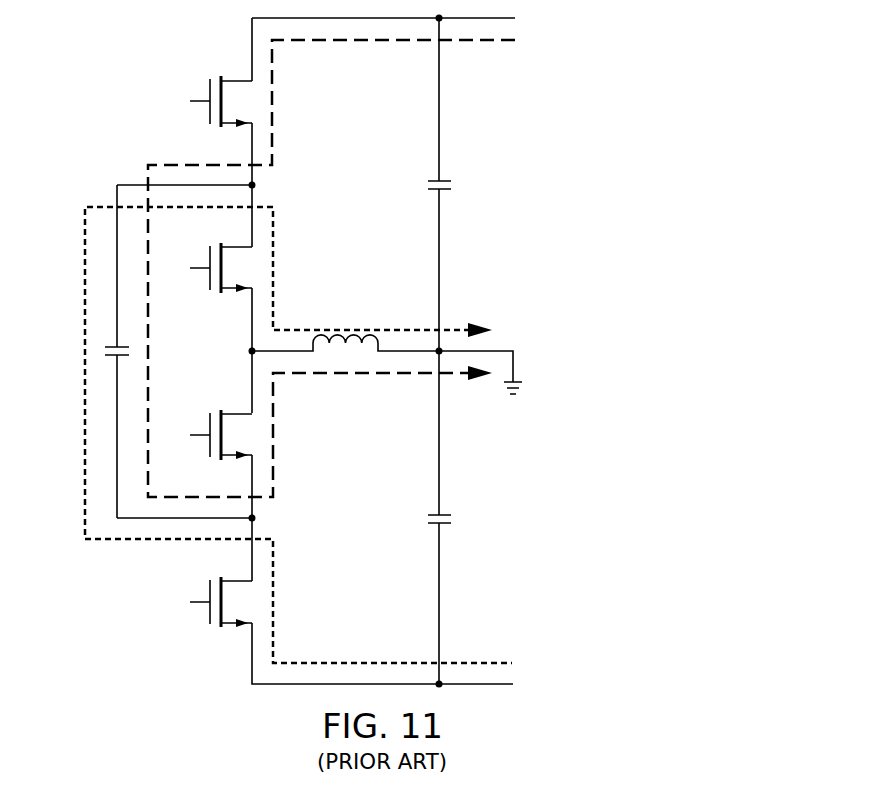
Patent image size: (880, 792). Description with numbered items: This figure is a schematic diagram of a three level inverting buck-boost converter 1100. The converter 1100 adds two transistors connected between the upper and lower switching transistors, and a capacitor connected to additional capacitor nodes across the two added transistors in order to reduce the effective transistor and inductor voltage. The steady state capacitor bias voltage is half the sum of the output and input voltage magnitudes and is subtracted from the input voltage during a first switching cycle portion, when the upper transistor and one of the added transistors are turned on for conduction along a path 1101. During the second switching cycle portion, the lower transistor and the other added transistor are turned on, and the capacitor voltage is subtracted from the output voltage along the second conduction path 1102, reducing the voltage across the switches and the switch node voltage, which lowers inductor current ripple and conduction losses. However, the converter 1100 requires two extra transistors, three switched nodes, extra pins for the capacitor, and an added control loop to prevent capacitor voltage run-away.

The three level converter 1100 is at (110, 79).
The path 1101 is at (355, 42).
The output current loop 1102 is at (350, 663).